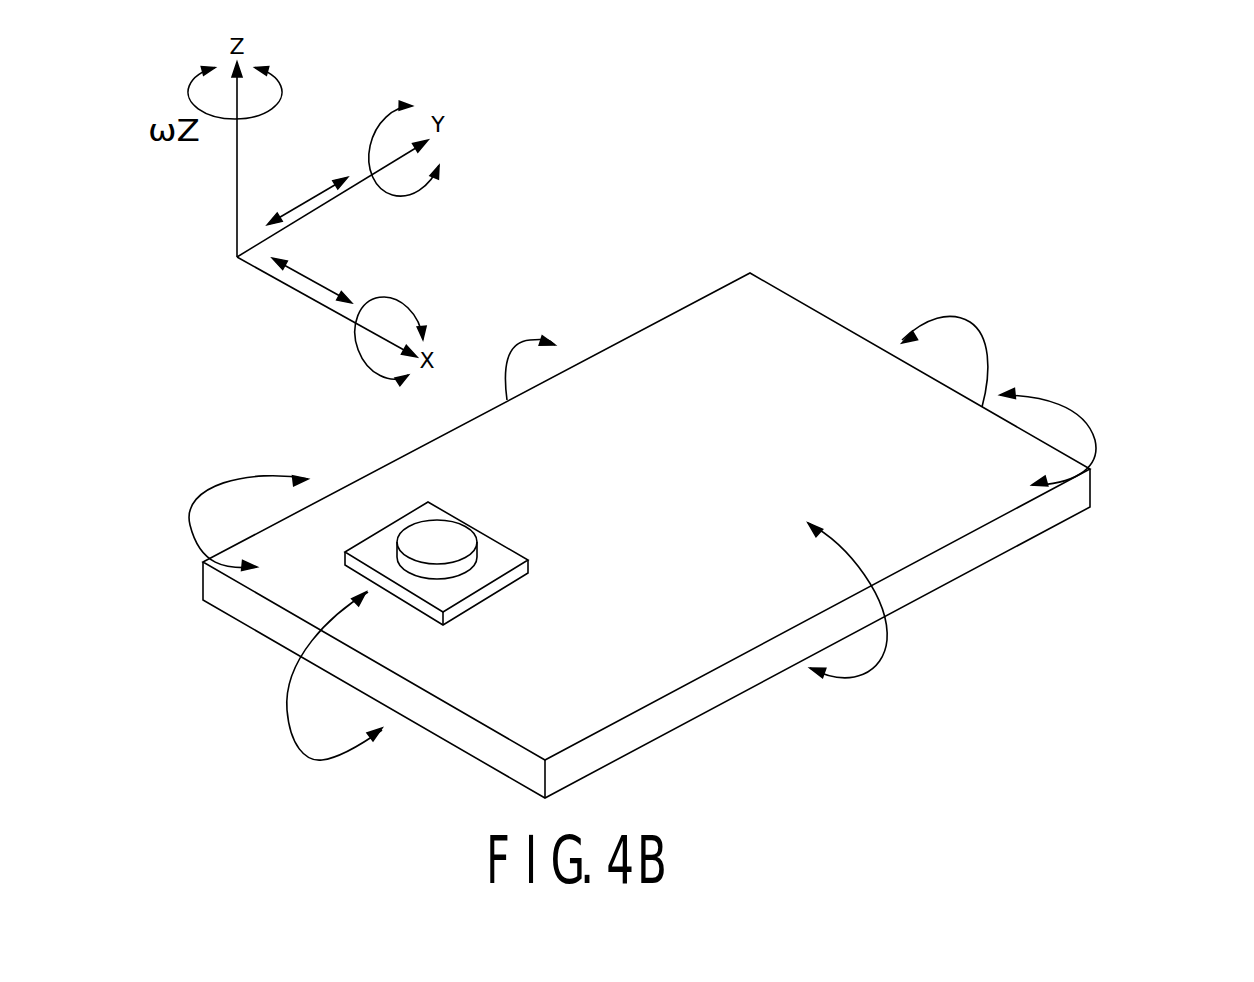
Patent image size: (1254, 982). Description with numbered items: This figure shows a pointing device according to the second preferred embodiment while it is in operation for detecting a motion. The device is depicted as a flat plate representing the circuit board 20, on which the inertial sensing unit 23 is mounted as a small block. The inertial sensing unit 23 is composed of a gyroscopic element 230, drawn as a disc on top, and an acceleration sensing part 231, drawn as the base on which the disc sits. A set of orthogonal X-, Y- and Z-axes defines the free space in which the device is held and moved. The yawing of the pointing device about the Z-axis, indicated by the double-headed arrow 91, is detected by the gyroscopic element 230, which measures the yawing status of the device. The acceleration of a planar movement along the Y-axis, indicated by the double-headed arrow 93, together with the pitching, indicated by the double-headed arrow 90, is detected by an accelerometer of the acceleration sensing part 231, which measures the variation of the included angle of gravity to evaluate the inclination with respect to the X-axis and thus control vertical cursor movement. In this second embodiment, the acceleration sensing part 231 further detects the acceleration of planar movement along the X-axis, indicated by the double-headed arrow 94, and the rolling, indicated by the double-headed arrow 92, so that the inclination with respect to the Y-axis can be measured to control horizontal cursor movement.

The circuit board 20 is at (968, 490).
The inertial sensing unit 23 is at (499, 589).
The gyroscopic element 230 is at (458, 540).
The acceleration sensing part 231 is at (463, 597).
The double-headed arrow (pitching) 90 is at (320, 760).
The double-headed arrow (yawing) 91 is at (214, 486).
The double-headed arrow (rolling) 92 is at (886, 652).
The double-headed arrow (planar movement along Y-axis) 93 is at (327, 193).
The double-headed arrow (planar movement along X-axis) 94 is at (308, 285).